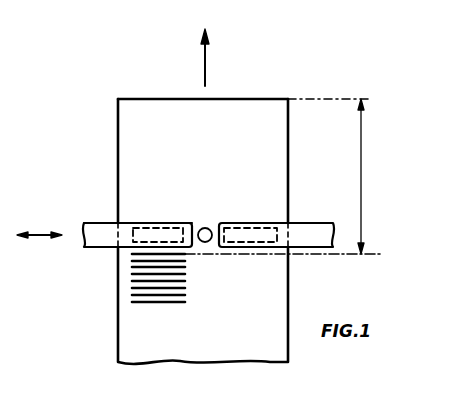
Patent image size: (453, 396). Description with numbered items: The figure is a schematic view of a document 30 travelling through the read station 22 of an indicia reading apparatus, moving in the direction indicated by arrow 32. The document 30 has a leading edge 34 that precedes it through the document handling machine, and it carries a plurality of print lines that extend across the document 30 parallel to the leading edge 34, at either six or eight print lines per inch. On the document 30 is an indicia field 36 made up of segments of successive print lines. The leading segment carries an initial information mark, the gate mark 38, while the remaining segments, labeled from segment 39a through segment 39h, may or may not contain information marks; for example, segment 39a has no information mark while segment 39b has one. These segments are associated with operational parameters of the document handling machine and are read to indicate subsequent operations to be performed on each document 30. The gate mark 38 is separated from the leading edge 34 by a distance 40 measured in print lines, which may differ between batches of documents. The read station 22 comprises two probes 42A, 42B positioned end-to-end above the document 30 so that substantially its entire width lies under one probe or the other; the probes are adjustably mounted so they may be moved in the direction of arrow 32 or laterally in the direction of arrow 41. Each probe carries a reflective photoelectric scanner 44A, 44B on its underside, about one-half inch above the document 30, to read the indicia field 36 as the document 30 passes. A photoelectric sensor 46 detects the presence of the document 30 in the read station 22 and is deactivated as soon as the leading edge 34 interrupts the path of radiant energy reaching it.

The read station 22 is at (79, 224).
The document 30 is at (290, 135).
The arrow 32 is at (205, 63).
The leading edge 34 is at (257, 99).
The indicia field 36 is at (171, 304).
The gate mark 38 is at (185, 256).
The indicia segment 39a is at (185, 262).
The indicia segment 39b is at (185, 268).
The indicia segment 39h is at (185, 302).
The distance 40 is at (362, 170).
The arrow 41 is at (33, 237).
The probe 42A is at (96, 222).
The probe 42B is at (297, 222).
The reflective photoelectric scanner 44A is at (145, 226).
The reflective photoelectric scanner 44B is at (250, 226).
The photoelectric sensor 46 is at (204, 227).